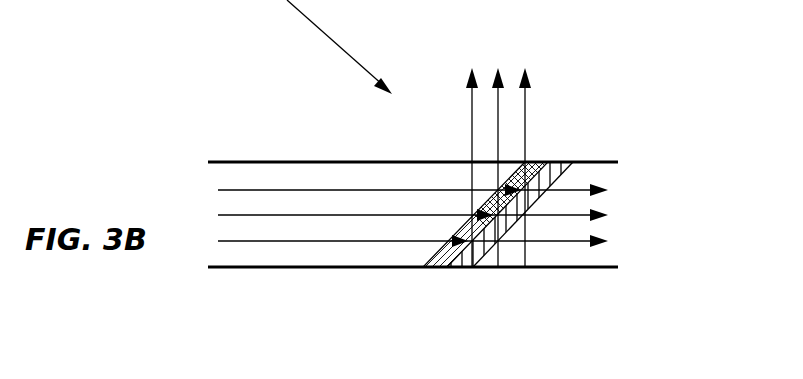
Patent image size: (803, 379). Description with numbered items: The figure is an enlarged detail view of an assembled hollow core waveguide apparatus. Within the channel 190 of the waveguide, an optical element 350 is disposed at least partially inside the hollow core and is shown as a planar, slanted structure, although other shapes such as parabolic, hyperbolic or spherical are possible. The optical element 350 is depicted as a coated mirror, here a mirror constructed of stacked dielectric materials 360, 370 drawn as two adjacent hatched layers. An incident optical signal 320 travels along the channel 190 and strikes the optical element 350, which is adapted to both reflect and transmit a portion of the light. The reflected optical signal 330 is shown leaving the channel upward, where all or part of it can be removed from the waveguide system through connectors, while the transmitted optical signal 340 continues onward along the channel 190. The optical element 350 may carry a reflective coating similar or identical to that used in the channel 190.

The channel 190 is at (348, 172).
The incident optical signal 320 is at (357, 242).
The reflected optical signal 330 is at (472, 120).
The transmitted optical signal 340 is at (530, 243).
The optical element 350 is at (448, 280).
The stacked dielectric material 360 is at (562, 163).
The stacked dielectric material 370 is at (538, 163).